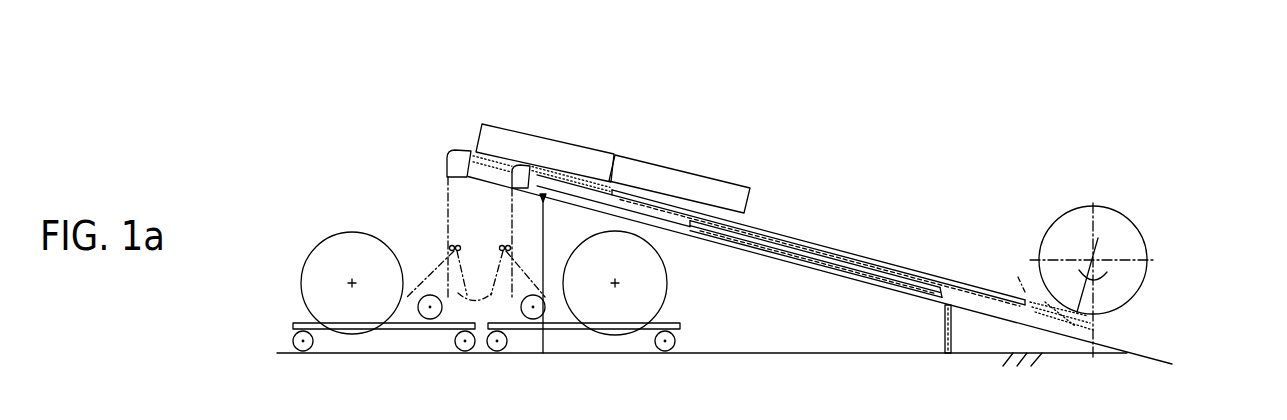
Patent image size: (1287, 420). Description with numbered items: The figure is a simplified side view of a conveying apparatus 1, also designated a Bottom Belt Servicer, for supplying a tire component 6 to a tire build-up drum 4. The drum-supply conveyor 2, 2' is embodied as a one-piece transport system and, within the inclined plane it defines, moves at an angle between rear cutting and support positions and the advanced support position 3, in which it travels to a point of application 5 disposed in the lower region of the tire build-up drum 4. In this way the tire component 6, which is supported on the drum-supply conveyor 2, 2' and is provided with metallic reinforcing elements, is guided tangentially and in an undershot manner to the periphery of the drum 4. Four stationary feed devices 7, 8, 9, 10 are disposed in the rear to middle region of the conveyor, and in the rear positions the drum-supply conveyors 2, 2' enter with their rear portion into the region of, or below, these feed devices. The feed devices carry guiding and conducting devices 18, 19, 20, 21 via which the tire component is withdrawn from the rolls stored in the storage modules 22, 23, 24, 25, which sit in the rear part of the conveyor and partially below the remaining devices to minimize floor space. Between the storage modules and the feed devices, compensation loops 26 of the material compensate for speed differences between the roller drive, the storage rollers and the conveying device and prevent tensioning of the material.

The conveying apparatus 1 is at (894, 196).
The drum-supply conveyor 2 is at (833, 243).
The drum-supply conveyor 2' is at (833, 243).
The advanced support position 3 is at (1036, 296).
The tire build-up drum 4 is at (1067, 227).
The point of application 5 is at (1107, 322).
The tire component 6 is at (822, 243).
The feed device 7 is at (578, 117).
The feed device 8 is at (728, 128).
The feed device 9 is at (601, 156).
The feed device 10 is at (728, 197).
The guiding and conducting device 18 is at (493, 111).
The guiding and conducting device 19 is at (573, 116).
The guiding and conducting device 20 is at (460, 163).
The guiding and conducting device 21 is at (528, 173).
The storage module 22 is at (676, 283).
The storage module 23 is at (319, 257).
The storage module 24 is at (318, 280).
The storage module 25 is at (645, 278).
The compensation loop 26 is at (502, 286).